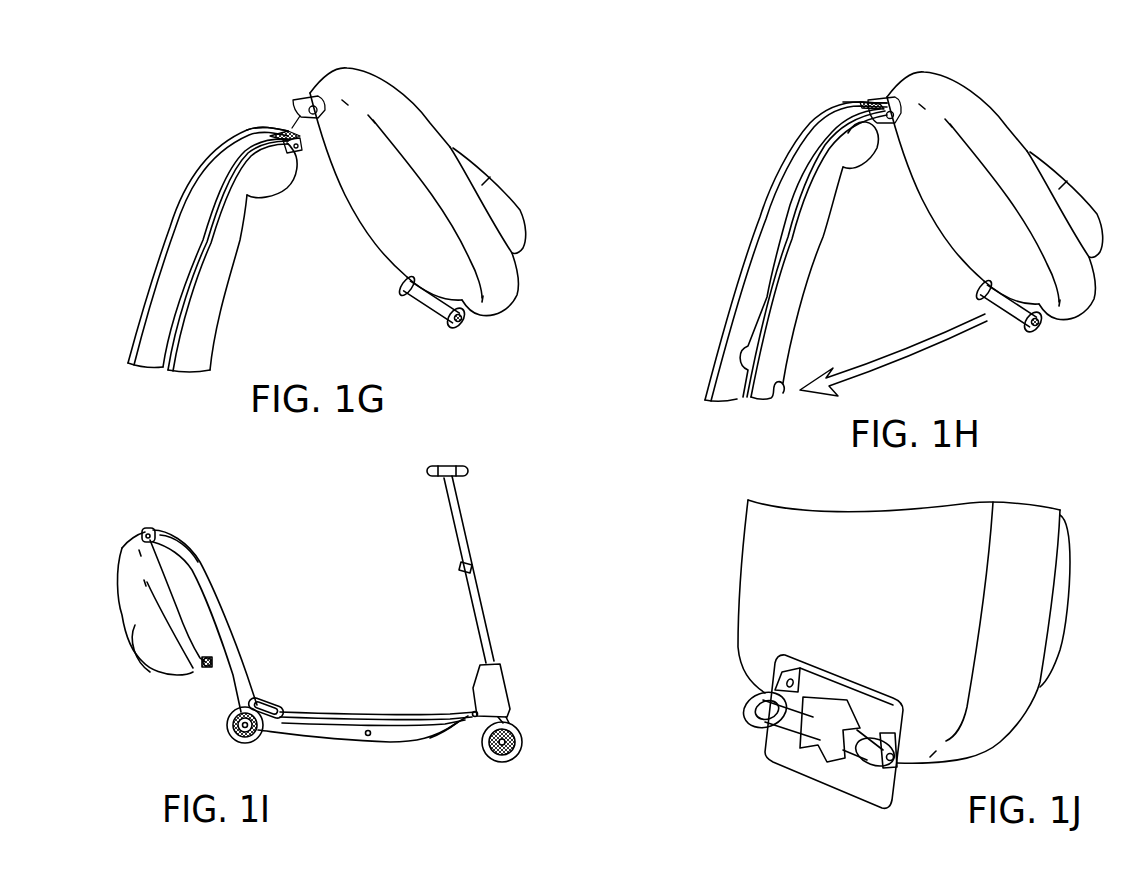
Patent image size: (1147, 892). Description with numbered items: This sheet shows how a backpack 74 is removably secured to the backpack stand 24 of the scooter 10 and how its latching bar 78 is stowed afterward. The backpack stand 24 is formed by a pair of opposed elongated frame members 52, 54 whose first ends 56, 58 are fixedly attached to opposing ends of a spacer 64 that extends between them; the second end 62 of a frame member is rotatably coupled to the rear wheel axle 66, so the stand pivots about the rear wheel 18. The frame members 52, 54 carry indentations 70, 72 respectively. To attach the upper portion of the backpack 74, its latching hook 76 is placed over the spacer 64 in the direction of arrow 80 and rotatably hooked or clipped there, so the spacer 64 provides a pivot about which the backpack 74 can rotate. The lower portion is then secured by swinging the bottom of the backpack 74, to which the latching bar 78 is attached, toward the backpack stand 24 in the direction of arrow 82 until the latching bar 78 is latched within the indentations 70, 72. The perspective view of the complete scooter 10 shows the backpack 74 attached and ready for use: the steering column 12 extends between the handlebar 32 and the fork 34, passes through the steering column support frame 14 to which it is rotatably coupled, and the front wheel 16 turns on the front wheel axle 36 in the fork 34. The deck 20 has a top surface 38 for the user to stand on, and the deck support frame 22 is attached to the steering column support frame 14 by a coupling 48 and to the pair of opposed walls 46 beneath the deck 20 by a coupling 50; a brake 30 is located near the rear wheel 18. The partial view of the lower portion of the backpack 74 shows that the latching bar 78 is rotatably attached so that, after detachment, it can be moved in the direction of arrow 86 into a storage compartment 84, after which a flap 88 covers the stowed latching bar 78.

In FIG. 1I, the scooter 10 is at (486, 493).
In FIG. 1I, the steering column 12 is at (447, 508).
In FIG. 1I, the steering column support frame 14 is at (507, 677).
In FIG. 1I, the front wheel 16 is at (506, 758).
In FIG. 1I, the rear wheel 18 is at (248, 745).
In FIG. 1I, the deck 20 is at (327, 699).
In FIG. 1I, the deck support frame 22 is at (443, 738).
In FIG. 1G, the backpack stand 24 is at (114, 228).
In FIG. 1H, the backpack stand 24 is at (705, 246).
In FIG. 1I, the backpack stand 24 is at (236, 551).
In FIG. 1I, the brake 30 is at (277, 702).
In FIG. 1I, the handlebar 32 is at (440, 469).
In FIG. 1I, the fork 34 is at (510, 721).
In FIG. 1I, the front wheel axle 36 is at (492, 755).
In FIG. 1I, the top surface 38 is at (357, 712).
In FIG. 1I, the opposed walls 46 is at (340, 738).
In FIG. 1I, the coupling 48 is at (469, 712).
In FIG. 1I, the coupling 50 is at (368, 737).
In FIG. 1G, the frame member 52 is at (173, 347).
In FIG. 1H, the frame member 52 is at (784, 278).
In FIG. 1I, the frame member 52 is at (218, 596).
In FIG. 1G, the frame member 54 is at (150, 290).
In FIG. 1H, the frame member 54 is at (780, 251).
In FIG. 1I, the frame member 54 is at (224, 697).
In FIG. 1G, the first end 56 is at (252, 190).
In FIG. 1H, the first end 56 is at (847, 163).
In FIG. 1G, the first end 58 is at (262, 128).
In FIG. 1H, the first end 58 is at (853, 100).
In FIG. 1I, the second end 62 is at (224, 713).
In FIG. 1G, the spacer 64 is at (289, 130).
In FIG. 1I, the spacer 64 is at (160, 517).
In FIG. 1I, the rear wheel axle 66 is at (234, 744).
In FIG. 1H, the indentation 70 is at (786, 400).
In FIG. 1H, the indentation 72 is at (737, 350).
In FIG. 1I, the indentation 72 is at (216, 644).
In FIG. 1G, the backpack 74 is at (437, 121).
In FIG. 1H, the backpack 74 is at (1010, 122).
In FIG. 1I, the backpack 74 is at (125, 597).
In FIG. 1J, the backpack 74 is at (1055, 566).
In FIG. 1G, the latching hook 76 is at (310, 102).
In FIG. 1H, the latching hook 76 is at (878, 100).
In FIG. 1I, the latching hook 76 is at (142, 537).
In FIG. 1G, the latching bar 78 is at (423, 318).
In FIG. 1H, the latching bar 78 is at (997, 320).
In FIG. 1I, the latching bar 78 is at (203, 670).
In FIG. 1J, the latching bar 78 is at (784, 730).
In FIG. 1G, the arrow 80 is at (293, 129).
In FIG. 1H, the arrow 82 is at (903, 363).
In FIG. 1J, the storage compartment 84 is at (852, 735).
In FIG. 1J, the arrow 86 is at (810, 747).
In FIG. 1J, the flap 88 is at (864, 790).